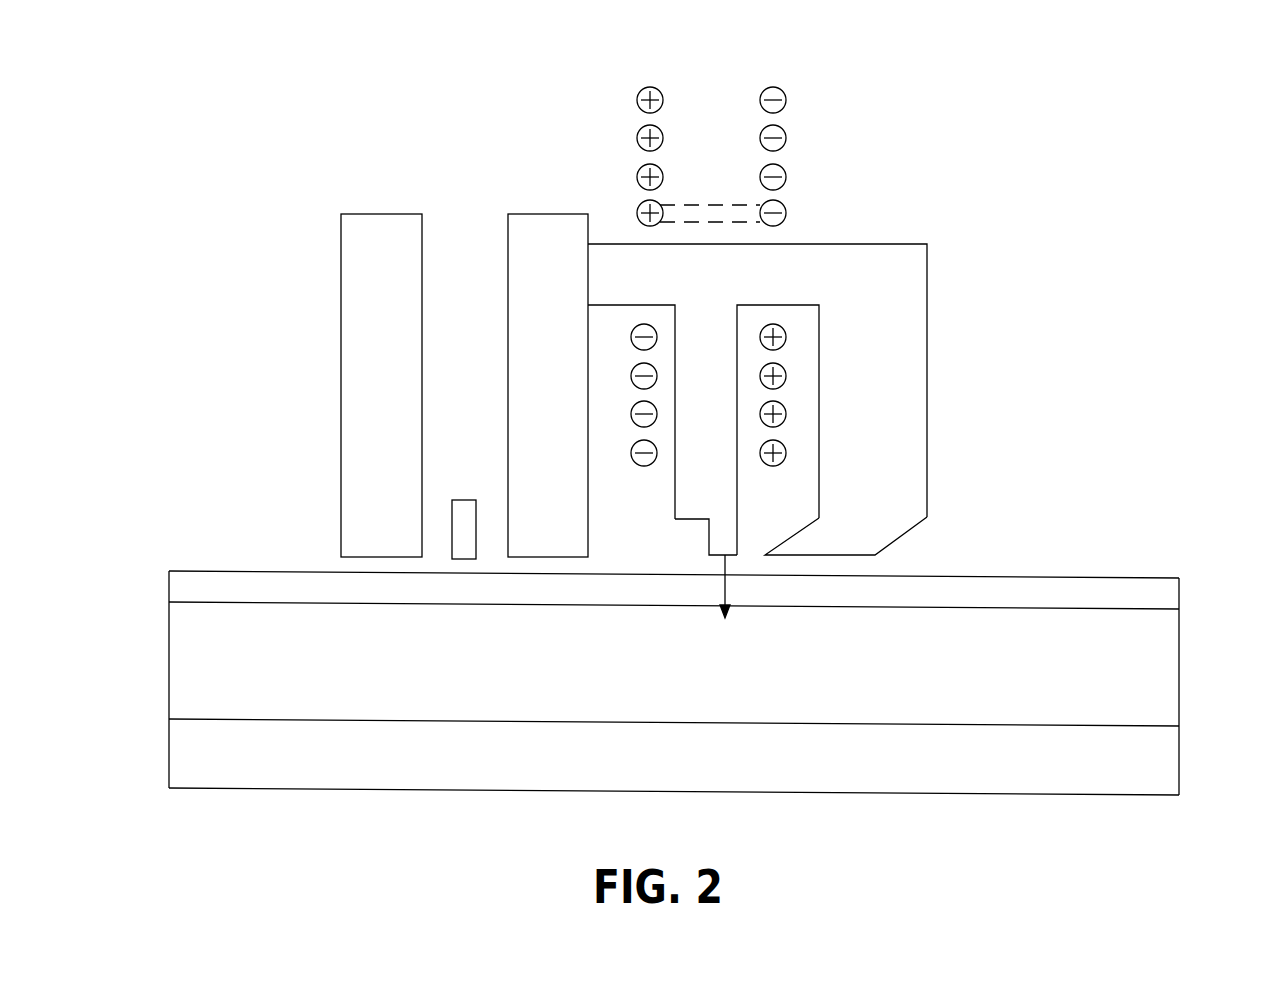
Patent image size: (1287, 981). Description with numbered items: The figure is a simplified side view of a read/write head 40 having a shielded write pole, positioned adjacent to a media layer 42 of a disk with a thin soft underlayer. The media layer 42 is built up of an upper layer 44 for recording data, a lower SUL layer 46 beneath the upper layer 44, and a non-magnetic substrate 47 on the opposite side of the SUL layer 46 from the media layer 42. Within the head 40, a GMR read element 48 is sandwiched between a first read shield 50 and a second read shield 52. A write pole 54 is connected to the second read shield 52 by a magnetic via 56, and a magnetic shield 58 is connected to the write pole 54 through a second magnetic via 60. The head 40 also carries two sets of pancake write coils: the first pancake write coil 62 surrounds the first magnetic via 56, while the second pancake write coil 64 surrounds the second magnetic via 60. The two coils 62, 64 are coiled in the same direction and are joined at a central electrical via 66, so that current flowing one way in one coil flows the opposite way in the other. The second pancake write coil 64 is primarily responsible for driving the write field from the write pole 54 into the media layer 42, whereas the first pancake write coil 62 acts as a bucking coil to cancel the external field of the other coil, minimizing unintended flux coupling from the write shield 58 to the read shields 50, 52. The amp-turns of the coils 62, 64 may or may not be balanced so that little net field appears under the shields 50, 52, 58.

The read/write head 40 is at (222, 146).
The media layer 42 is at (1205, 706).
The upper layer 44 is at (1165, 592).
The lower SUL layer 46 is at (1165, 693).
The non-magnetic substrate 47 is at (915, 763).
The GMR read element 48 is at (473, 499).
The first read shield 50 is at (367, 214).
The second read shield 52 is at (534, 215).
The write pole 54 is at (723, 525).
The magnetic via 56 is at (625, 243).
The magnetic shield 58 is at (908, 508).
The second magnetic via 60 is at (813, 250).
The first pancake write coil 62 is at (648, 83).
The second pancake write coil 64 is at (773, 83).
The central electrical via 66 is at (683, 203).